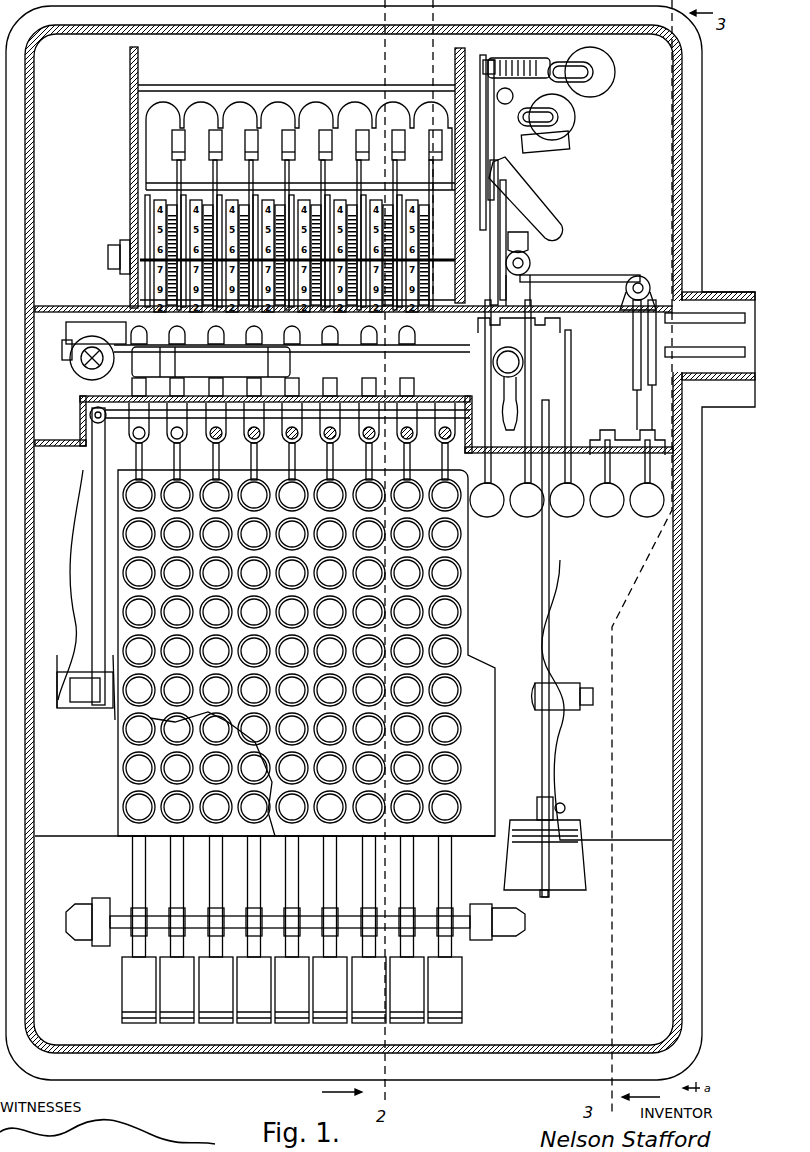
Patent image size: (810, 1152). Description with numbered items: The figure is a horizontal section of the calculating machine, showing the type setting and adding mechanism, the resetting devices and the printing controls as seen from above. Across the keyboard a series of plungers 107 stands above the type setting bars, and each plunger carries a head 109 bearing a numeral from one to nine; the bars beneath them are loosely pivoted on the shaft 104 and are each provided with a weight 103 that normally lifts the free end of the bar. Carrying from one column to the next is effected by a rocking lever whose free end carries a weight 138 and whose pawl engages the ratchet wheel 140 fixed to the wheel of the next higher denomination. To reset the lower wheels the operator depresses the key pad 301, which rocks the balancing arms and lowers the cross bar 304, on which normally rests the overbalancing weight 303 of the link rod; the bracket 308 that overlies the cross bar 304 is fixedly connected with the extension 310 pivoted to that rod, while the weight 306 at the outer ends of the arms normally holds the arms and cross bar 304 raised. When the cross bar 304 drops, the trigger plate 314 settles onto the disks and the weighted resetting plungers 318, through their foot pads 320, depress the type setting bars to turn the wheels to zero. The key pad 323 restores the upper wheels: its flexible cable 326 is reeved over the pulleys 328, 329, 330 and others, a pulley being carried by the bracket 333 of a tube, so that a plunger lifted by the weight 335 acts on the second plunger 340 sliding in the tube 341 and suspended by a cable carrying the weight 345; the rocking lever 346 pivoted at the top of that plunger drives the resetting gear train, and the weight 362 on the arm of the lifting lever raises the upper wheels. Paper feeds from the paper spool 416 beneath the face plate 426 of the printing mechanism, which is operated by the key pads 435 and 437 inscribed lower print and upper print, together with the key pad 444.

The weight 103 is at (463, 1003).
The shaft 104 is at (526, 931).
The plunger 107 is at (321, 929).
The head 109 is at (462, 580).
The weight 138 is at (178, 143).
The ratchet wheel 140 is at (108, 257).
The key pad 301 is at (610, 517).
The overbalancing weight 303 is at (548, 217).
The cross bar 304 is at (105, 430).
The overbalancing weight 306 is at (572, 882).
The bracket 308 is at (510, 432).
The extension 310 is at (487, 232).
The trigger plate 314 is at (275, 100).
The resetting plunger 318 is at (287, 441).
The foot pad 320 is at (522, 239).
The key pad 323 is at (648, 517).
The flexible cable 326 is at (600, 275).
The pulley 328 is at (686, 333).
The pulley 329 is at (642, 276).
The pulley 330 is at (532, 263).
The bracket 333 is at (518, 130).
The weight 335 is at (576, 118).
The second plunger 340 is at (522, 62).
The tube 341 is at (490, 62).
The weight 345 is at (615, 72).
The rocking lever 346 is at (455, 85).
The weight 362 is at (553, 148).
The paper spool 416 is at (262, 372).
The face plate 426 is at (113, 318).
The key pad 435 is at (487, 518).
The key pad 437 is at (528, 518).
The key pad 444 is at (572, 513).